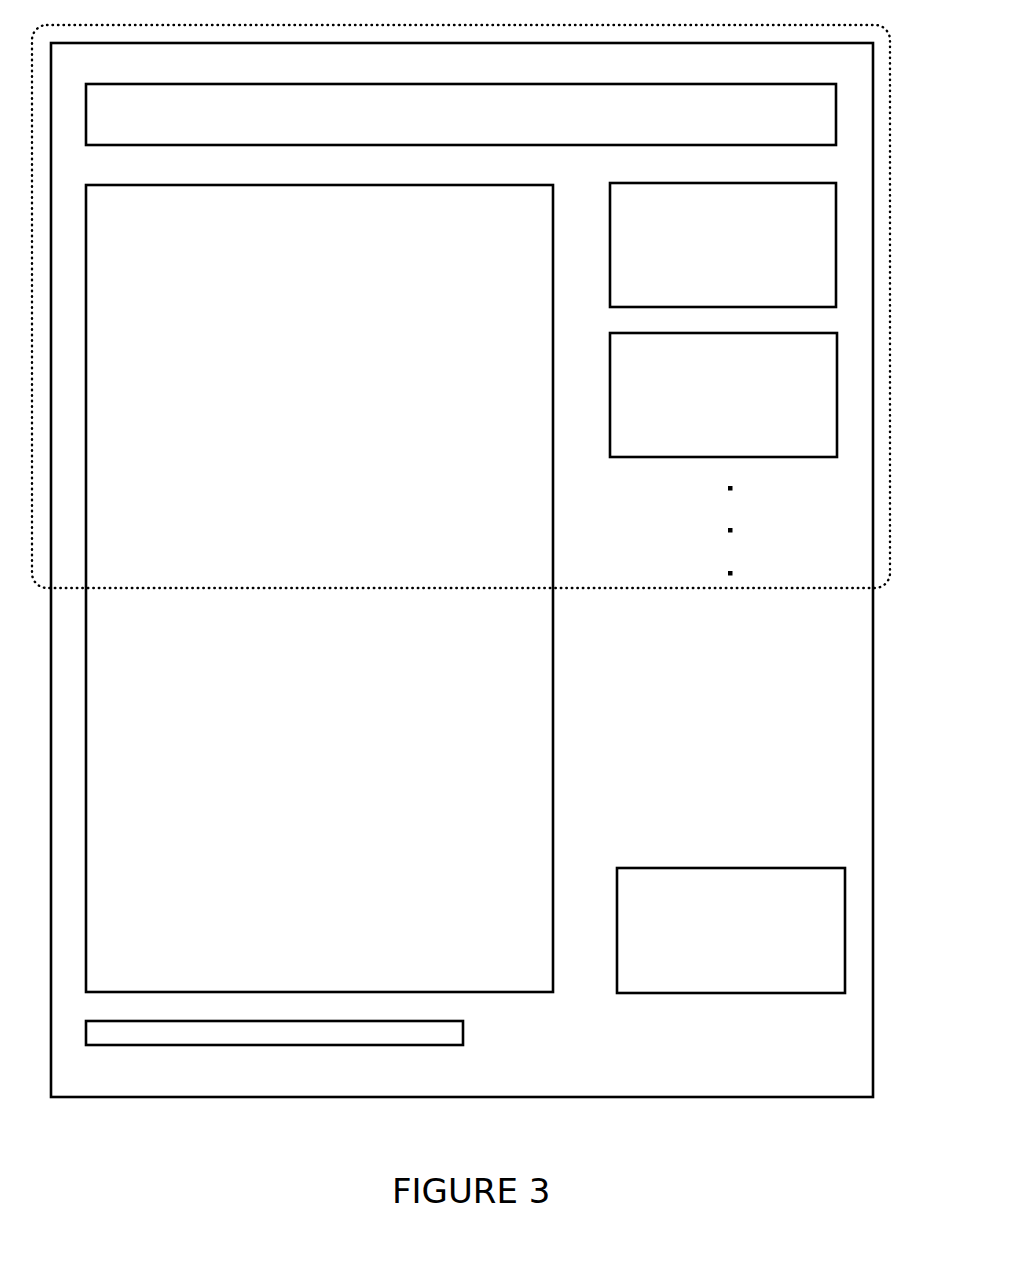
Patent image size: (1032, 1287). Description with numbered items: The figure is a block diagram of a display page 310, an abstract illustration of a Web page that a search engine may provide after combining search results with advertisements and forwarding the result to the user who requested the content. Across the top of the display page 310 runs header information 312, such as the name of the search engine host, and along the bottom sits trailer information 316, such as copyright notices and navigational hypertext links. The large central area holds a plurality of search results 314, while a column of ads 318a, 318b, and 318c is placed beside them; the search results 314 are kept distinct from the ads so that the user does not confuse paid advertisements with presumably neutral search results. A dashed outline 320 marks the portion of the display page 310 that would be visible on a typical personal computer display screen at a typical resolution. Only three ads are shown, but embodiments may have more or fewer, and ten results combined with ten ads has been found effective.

The display page 310 is at (462, 1097).
The header information 312 is at (462, 84).
The search results 314 is at (553, 730).
The trailer information 316 is at (463, 1030).
The ad 318a is at (730, 183).
The ad 318b is at (730, 333).
The ad 318c is at (731, 868).
The outline 320 is at (853, 588).